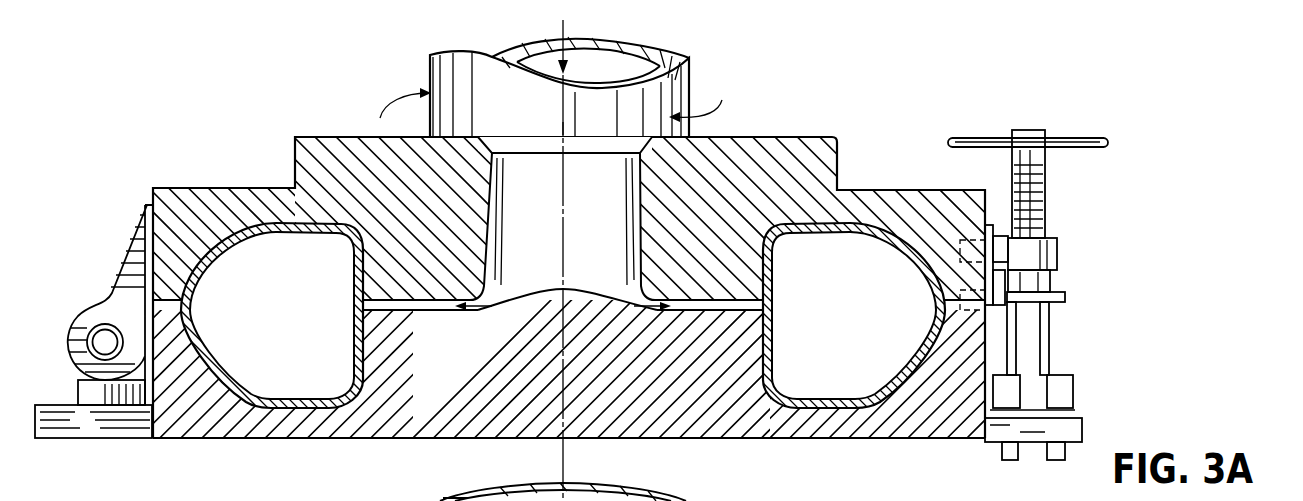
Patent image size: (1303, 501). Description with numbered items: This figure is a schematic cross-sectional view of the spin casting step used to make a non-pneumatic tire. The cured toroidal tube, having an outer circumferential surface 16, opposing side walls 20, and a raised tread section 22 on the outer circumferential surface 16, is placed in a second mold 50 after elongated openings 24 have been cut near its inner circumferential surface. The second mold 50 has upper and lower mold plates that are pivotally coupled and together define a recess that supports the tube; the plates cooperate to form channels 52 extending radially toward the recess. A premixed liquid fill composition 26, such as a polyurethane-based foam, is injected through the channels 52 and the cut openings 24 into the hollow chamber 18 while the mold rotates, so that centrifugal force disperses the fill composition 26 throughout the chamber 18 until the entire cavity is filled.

The outer circumferential surface 16 is at (238, 222).
The hollow chamber 18 is at (870, 315).
The side walls 20 is at (862, 223).
The raised section 22 is at (212, 373).
The elongated openings 24 is at (360, 308).
The fill composition 26 is at (563, 28).
The second mold 50 is at (1161, 114).
The channels 52 is at (422, 306).